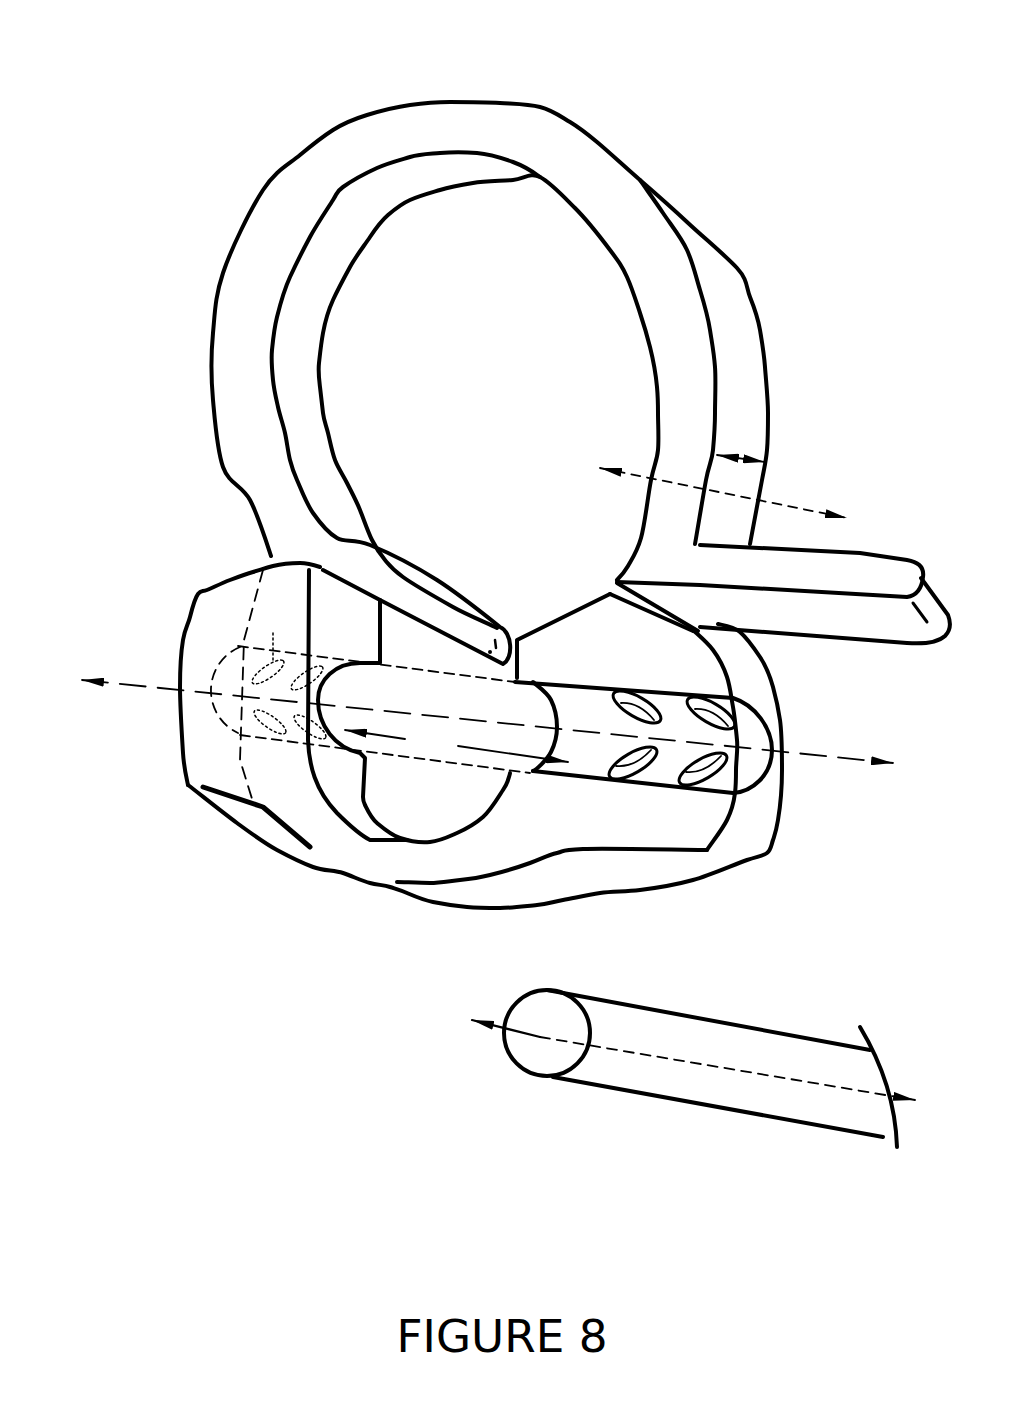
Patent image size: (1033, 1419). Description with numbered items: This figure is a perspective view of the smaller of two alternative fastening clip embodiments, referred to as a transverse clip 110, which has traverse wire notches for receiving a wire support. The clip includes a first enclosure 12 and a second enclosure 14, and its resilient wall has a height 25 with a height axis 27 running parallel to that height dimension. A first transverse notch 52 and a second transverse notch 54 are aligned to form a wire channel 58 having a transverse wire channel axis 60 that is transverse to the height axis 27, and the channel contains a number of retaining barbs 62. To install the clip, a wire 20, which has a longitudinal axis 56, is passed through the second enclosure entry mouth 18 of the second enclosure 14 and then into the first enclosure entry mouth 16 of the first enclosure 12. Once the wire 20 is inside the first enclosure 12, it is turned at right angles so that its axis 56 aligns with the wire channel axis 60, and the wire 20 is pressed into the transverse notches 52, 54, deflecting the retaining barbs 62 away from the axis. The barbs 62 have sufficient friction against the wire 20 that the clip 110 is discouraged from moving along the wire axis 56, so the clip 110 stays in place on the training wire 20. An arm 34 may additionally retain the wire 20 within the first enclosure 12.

The transverse clip 110 is at (268, 100).
The second enclosure 14 is at (525, 296).
The height 25 is at (740, 458).
The height axis 27 is at (773, 500).
The arm 34 is at (427, 587).
The first enclosure entry mouth 16 is at (519, 618).
The second enclosure entry mouth 18 is at (606, 581).
The transverse wire channel axis 60 is at (853, 755).
The first enclosure 12 is at (412, 800).
The second transverse notch 54 is at (350, 665).
The wire channel 58 is at (456, 746).
The first transverse notch 52 is at (580, 750).
The retaining barbs 62 is at (730, 713).
The wire 20 is at (717, 1043).
The longitudinal axis 56 is at (493, 1027).